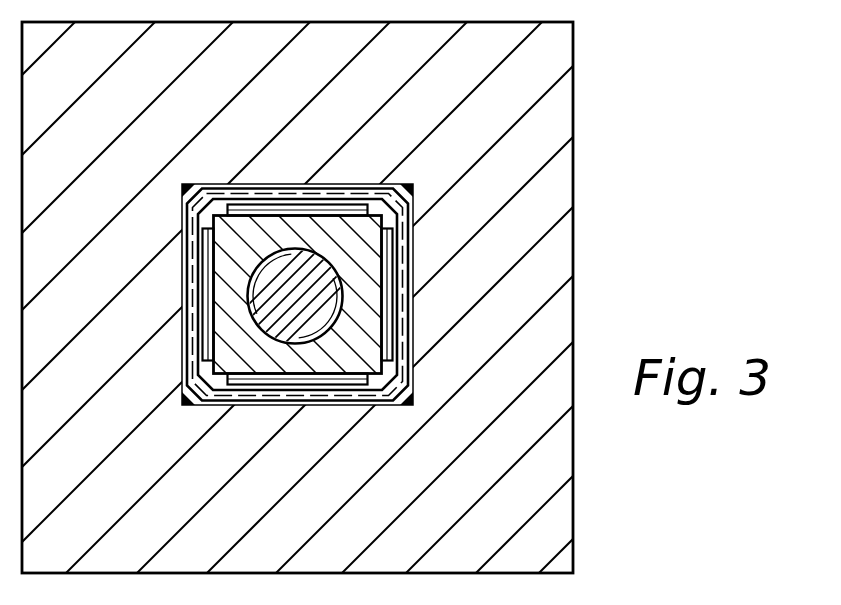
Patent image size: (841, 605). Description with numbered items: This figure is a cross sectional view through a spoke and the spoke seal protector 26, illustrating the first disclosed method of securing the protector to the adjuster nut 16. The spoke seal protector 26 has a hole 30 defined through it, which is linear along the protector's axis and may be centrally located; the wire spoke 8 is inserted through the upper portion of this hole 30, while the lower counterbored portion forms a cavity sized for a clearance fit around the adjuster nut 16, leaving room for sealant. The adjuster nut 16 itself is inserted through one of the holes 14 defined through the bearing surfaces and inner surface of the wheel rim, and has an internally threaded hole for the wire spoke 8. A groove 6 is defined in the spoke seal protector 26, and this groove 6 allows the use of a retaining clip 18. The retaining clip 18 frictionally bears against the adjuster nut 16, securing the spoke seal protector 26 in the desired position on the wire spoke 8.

The spoke seal protector 26 is at (575, 520).
The retaining clip 18 is at (184, 405).
The groove 6 is at (188, 404).
The hole 30 is at (380, 403).
The adjuster nut 16 is at (402, 405).
The holes 14 is at (340, 260).
The wire spoke 8 is at (297, 265).